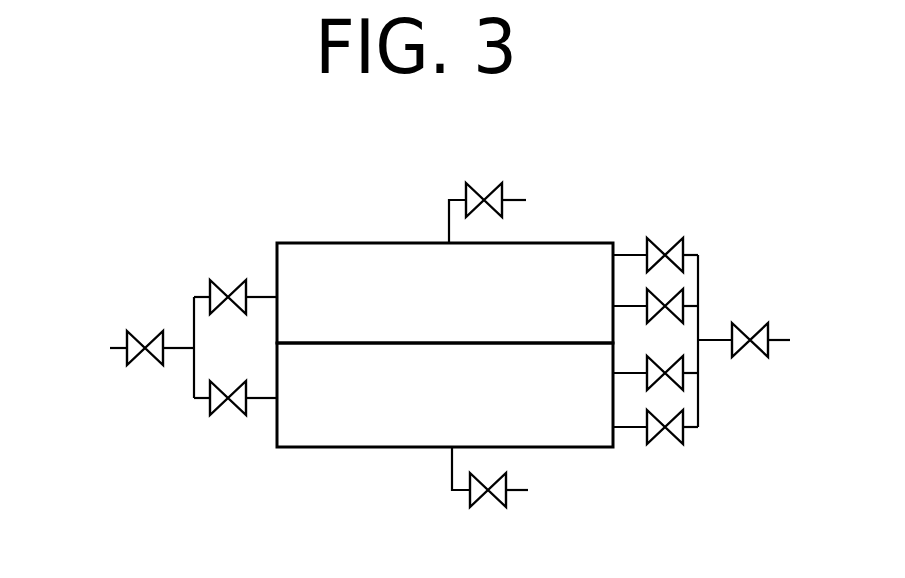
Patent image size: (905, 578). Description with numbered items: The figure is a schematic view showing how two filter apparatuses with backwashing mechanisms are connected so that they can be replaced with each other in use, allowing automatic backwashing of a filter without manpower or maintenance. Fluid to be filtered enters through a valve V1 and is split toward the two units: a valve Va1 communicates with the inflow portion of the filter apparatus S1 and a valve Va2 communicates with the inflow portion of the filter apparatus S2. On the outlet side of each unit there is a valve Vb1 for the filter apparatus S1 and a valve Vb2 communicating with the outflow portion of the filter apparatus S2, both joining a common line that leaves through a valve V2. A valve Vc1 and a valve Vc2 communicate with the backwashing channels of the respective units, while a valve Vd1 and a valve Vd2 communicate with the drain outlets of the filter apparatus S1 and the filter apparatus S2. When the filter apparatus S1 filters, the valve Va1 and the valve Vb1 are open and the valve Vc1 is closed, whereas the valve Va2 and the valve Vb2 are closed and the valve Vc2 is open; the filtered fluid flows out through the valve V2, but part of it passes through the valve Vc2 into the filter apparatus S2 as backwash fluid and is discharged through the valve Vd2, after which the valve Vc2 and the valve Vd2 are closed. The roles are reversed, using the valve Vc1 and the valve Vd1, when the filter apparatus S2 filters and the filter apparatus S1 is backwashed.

The filter apparatus S1 is at (465, 310).
The filter apparatus S2 is at (466, 417).
The valve V1 is at (127, 347).
The valve V2 is at (764, 340).
The valve Va1 is at (224, 280).
The valve Va2 is at (224, 414).
The valve Vb1 is at (675, 300).
The valve Vb2 is at (678, 378).
The valve Vc1 is at (675, 252).
The valve Vc2 is at (675, 430).
The valve Vd1 is at (478, 195).
The valve Vd2 is at (479, 494).